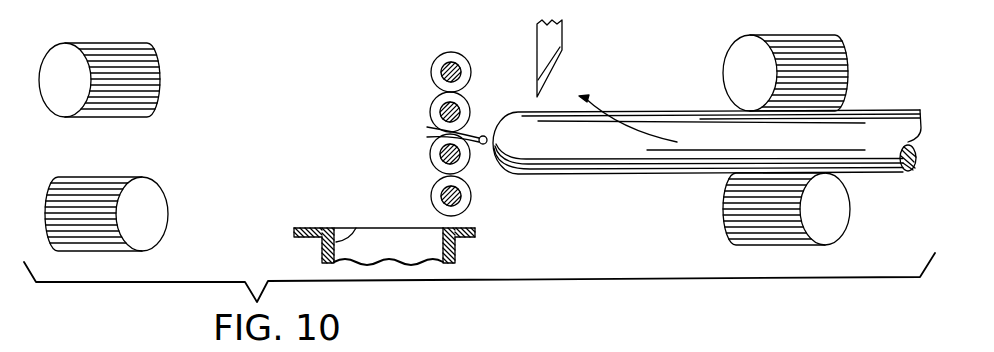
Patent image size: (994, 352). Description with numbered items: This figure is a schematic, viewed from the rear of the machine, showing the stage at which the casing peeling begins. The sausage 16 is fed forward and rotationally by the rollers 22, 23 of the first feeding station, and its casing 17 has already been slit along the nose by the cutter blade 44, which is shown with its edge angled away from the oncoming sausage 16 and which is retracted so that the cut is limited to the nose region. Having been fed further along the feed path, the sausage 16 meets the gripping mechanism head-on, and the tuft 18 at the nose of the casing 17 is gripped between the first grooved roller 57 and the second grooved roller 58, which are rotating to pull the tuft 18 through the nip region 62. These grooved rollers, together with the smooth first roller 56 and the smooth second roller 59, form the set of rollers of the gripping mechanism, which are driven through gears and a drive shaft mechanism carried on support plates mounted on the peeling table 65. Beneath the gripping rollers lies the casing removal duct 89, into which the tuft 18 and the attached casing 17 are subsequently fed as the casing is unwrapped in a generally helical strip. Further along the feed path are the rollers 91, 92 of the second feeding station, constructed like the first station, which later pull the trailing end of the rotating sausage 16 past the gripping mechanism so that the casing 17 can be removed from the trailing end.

The sausage 16 is at (595, 180).
The casing 17 is at (523, 174).
The tuft 18 is at (425, 130).
The roller 22 is at (723, 70).
The roller 23 is at (723, 197).
The cutter blade 44 is at (537, 52).
The first roller 56 is at (431, 193).
The first grooved roller 57 is at (428, 152).
The second grooved roller 58 is at (436, 102).
The second smooth roller 59 is at (433, 62).
The nip region 62 is at (432, 120).
The peeling table 65 is at (310, 228).
The casing removal duct 89 is at (354, 228).
The roller 91 is at (160, 80).
The roller 92 is at (168, 214).